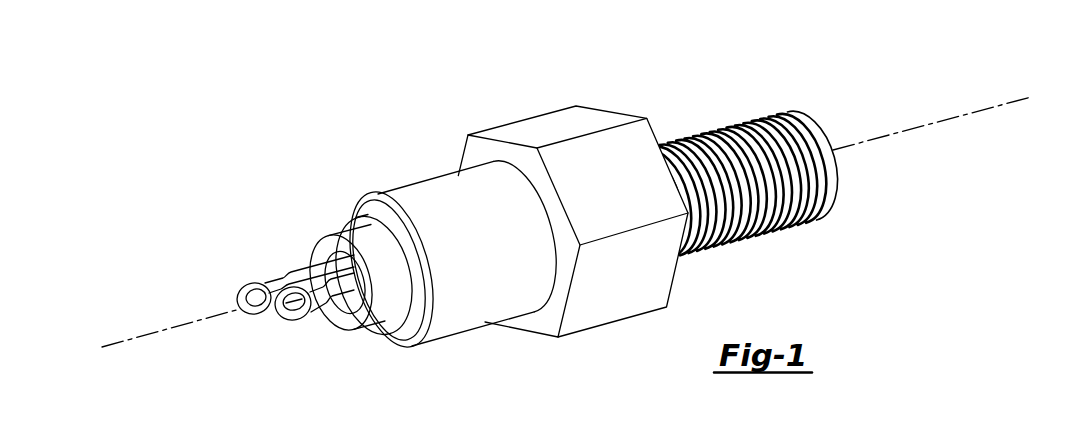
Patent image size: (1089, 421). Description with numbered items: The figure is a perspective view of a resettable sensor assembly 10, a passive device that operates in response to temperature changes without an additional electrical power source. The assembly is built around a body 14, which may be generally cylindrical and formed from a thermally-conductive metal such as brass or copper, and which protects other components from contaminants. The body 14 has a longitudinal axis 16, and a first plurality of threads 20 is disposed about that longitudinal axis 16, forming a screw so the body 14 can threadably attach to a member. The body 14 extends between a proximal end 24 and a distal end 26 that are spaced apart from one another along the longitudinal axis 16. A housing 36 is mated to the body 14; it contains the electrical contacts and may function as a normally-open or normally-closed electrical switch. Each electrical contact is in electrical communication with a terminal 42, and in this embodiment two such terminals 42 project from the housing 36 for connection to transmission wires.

The resettable sensor assembly 10 is at (330, 158).
The body 14 is at (444, 188).
The longitudinal axis 16 is at (123, 338).
The first plurality of threads 20 is at (770, 232).
The proximal end 24 is at (792, 120).
The distal end 26 is at (392, 190).
The housing 36 is at (373, 318).
The terminal 42 is at (256, 285).